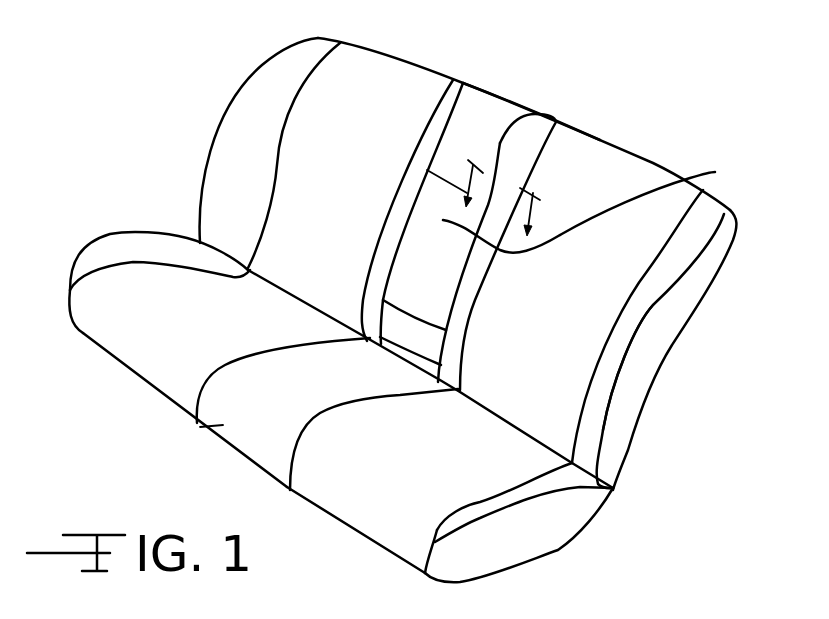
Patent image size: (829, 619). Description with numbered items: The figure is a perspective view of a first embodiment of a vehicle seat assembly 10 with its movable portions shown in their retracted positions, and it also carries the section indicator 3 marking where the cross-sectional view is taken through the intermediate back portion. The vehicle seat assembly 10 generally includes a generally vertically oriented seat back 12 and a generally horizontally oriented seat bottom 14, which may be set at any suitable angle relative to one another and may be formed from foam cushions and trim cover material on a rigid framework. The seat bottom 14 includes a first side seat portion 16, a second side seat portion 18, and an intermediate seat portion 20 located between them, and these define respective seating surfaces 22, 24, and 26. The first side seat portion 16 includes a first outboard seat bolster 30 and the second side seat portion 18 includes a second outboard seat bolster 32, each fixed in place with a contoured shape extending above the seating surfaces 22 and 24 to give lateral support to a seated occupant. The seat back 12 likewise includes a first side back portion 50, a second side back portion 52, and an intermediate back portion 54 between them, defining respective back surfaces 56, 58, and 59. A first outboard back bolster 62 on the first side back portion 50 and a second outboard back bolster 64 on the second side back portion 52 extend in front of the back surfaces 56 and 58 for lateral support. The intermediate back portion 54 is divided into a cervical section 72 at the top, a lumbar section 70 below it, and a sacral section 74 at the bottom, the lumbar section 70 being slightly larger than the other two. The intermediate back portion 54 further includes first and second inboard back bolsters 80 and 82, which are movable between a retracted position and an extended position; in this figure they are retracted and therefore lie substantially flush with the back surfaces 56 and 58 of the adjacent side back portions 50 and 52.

The vehicle seat assembly 10 is at (623, 60).
The seat back 12 is at (226, 106).
The seat bottom 14 is at (105, 230).
The first side seat portion 16 is at (128, 347).
The second side seat portion 18 is at (347, 512).
The intermediate seat portion 20 is at (200, 427).
The seating surface 22 is at (219, 327).
The seating surface 24 is at (441, 464).
The seating surface 26 is at (333, 386).
The first outboard seat bolster 30 is at (143, 240).
The second outboard seat bolster 32 is at (540, 487).
The first side back portion 50 is at (413, 28).
The second side back portion 52 is at (653, 167).
The intermediate back portion 54 is at (506, 110).
The back surface 56 is at (344, 164).
The back surface 58 is at (603, 289).
The back surface 59 is at (434, 276).
The first outboard back bolster 62 is at (265, 88).
The second outboard back bolster 64 is at (603, 403).
The lumbar section 70 is at (715, 172).
The cervical section 72 is at (491, 146).
The sacral section 74 is at (426, 341).
The first inboard back bolster 80 is at (465, 92).
The second inboard back bolster 82 is at (547, 120).
The section line for FIG. 3 is at (492, 193).